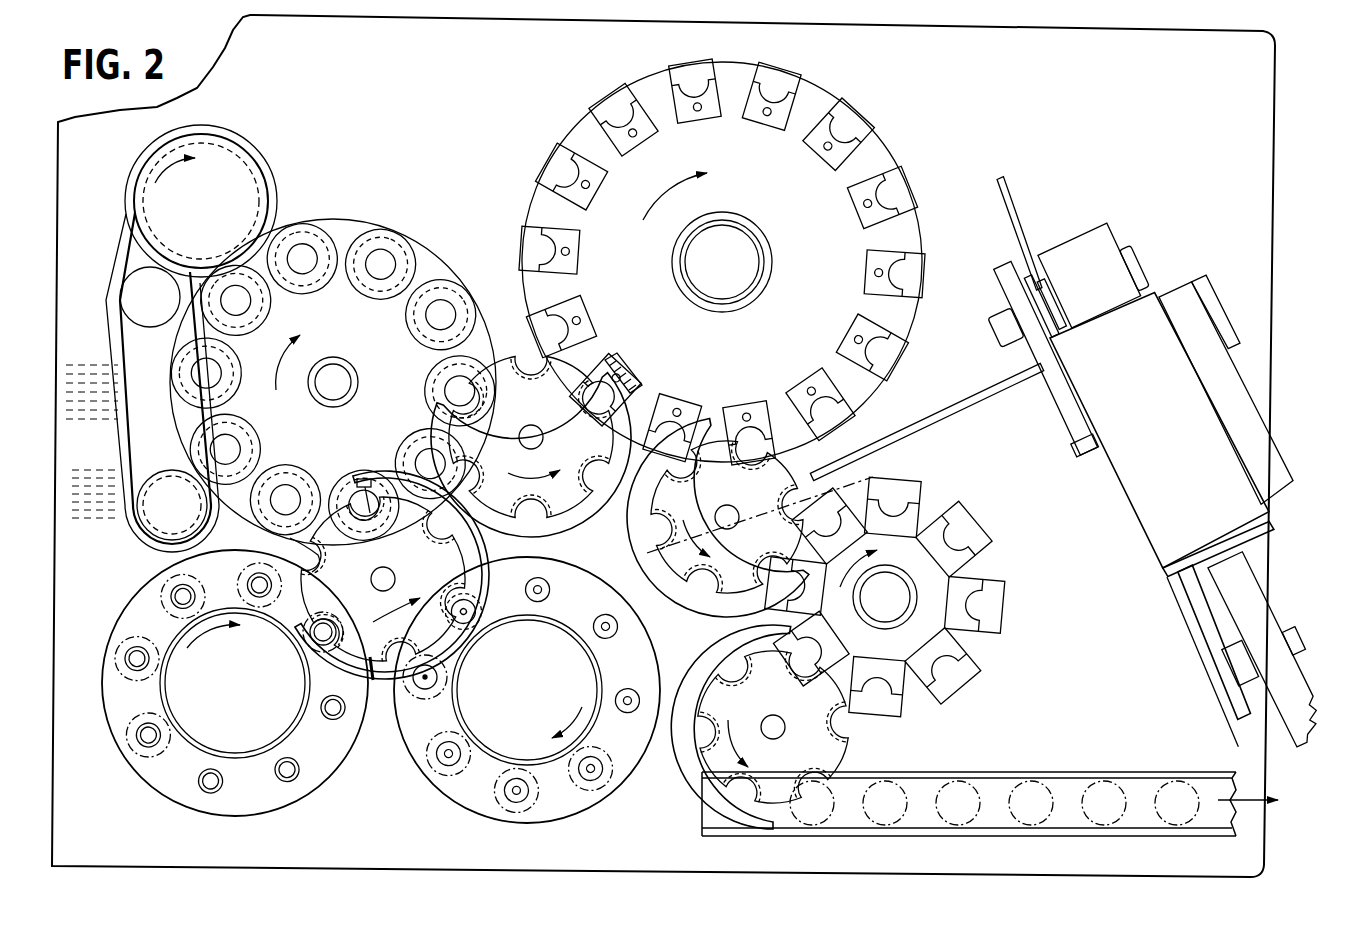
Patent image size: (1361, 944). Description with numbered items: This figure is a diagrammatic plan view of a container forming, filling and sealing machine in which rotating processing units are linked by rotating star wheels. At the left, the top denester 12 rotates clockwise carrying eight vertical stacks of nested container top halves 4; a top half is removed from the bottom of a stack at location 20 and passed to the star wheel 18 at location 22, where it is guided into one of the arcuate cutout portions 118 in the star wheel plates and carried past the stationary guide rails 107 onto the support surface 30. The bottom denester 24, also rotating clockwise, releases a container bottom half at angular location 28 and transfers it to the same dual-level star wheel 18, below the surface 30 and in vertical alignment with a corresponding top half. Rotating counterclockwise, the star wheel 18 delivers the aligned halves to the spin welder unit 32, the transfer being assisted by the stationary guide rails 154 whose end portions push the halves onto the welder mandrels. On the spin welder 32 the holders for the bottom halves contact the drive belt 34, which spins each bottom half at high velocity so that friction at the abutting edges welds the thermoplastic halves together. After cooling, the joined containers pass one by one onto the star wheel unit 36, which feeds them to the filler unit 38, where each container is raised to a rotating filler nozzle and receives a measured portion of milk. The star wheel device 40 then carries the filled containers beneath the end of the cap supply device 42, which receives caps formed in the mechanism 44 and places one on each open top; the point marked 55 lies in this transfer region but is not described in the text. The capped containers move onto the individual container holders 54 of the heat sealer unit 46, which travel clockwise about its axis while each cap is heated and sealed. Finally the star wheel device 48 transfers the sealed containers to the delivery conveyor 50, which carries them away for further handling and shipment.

The container top half 4 is at (135, 752).
The container top half supply unit or denester 12 is at (217, 702).
The star wheel device 18 is at (400, 597).
The location 20 is at (127, 737).
The location 22 is at (307, 627).
The bottom denester 24 is at (540, 703).
The angular location 28 is at (610, 778).
The support surface 30 is at (467, 562).
The spin welder unit 32 is at (345, 240).
The drive belt 34 is at (107, 350).
The star wheel unit 36 is at (552, 317).
The filler unit 38 is at (722, 262).
The star wheel device 40 is at (677, 530).
The container closure or cap supply device 42 is at (955, 412).
The cap forming mechanism 44 is at (1122, 440).
The heat sealer unit 46 is at (895, 607).
The star wheel device 48 is at (822, 757).
The delivery conveyor 50 is at (998, 797).
The container holders 54 is at (978, 528).
The transfer point 55 is at (799, 498).
The stationary guide rails 107 is at (392, 698).
The arcuate cutout portions 118 is at (322, 560).
The stationary guide rails 154 is at (373, 482).